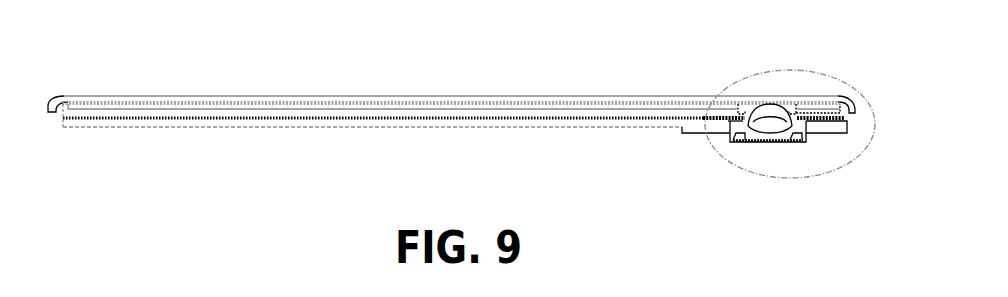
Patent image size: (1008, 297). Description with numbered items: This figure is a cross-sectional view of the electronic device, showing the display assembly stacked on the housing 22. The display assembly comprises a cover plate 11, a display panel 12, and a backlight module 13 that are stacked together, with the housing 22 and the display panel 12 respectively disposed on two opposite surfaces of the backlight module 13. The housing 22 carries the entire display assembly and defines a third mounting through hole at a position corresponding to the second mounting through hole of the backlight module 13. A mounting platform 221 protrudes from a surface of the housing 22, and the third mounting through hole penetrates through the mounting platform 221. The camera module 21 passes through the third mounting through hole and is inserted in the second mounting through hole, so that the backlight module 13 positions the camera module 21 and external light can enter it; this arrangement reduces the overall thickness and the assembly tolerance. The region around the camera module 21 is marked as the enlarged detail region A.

The cover plate 11 is at (588, 96).
The display panel 12 is at (660, 104).
The backlight module 13 is at (577, 120).
The housing 22 is at (625, 126).
The mounting platform 221 is at (699, 129).
The camera module 21 is at (774, 126).
The enlarged detail region A is at (728, 88).